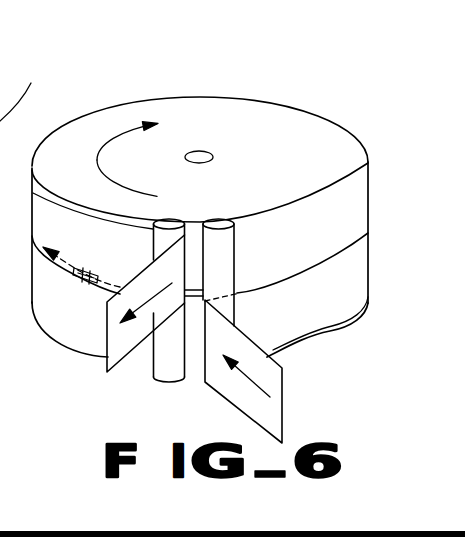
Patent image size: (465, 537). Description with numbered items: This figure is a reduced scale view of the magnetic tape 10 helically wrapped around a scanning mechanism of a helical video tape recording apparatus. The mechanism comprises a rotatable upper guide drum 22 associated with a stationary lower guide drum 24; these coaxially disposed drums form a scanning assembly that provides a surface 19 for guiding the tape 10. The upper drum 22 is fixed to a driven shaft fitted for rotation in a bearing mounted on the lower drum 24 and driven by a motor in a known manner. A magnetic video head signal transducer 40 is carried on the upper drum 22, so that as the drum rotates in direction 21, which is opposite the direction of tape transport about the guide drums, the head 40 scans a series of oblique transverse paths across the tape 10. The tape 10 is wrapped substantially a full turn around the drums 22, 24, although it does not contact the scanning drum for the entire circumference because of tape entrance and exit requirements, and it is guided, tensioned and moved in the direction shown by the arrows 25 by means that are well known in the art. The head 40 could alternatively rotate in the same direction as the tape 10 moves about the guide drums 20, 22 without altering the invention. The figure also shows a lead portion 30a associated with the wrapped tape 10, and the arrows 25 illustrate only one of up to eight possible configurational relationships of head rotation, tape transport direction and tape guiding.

The magnetic tape 10 is at (282, 399).
The surface 19 is at (80, 331).
The guide drum 20 is at (236, 80).
The direction of rotation 21 is at (97, 158).
The rotatable upper guide drum 22 is at (272, 103).
The stationary lower guide drum 24 is at (58, 336).
The arrows 25 is at (143, 312).
The tape lead 30a is at (27, 89).
The magnetic video head signal transducer 40 is at (87, 272).